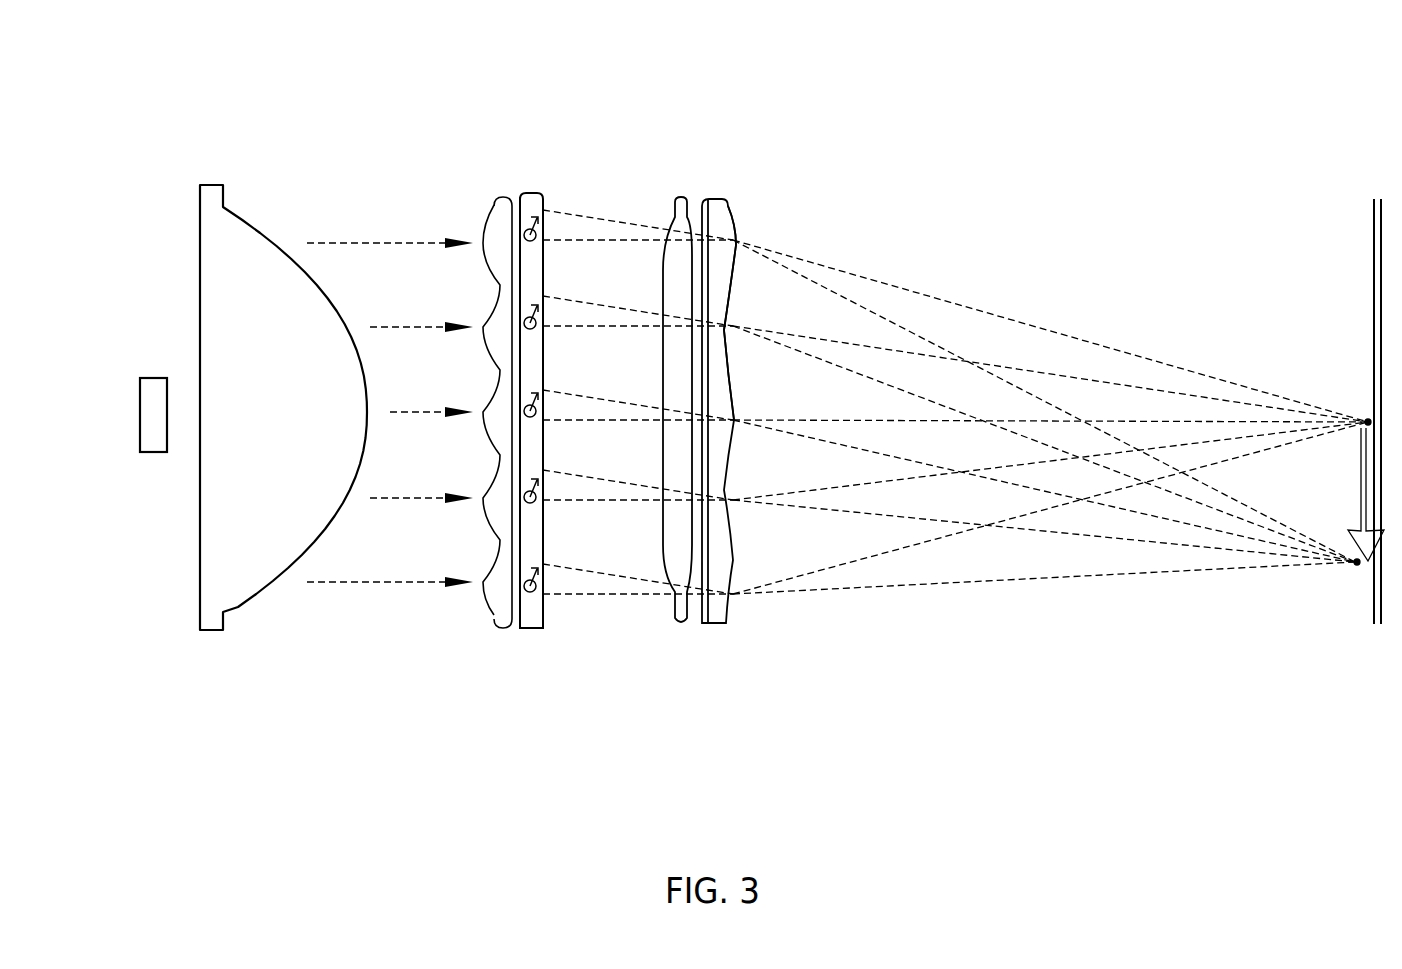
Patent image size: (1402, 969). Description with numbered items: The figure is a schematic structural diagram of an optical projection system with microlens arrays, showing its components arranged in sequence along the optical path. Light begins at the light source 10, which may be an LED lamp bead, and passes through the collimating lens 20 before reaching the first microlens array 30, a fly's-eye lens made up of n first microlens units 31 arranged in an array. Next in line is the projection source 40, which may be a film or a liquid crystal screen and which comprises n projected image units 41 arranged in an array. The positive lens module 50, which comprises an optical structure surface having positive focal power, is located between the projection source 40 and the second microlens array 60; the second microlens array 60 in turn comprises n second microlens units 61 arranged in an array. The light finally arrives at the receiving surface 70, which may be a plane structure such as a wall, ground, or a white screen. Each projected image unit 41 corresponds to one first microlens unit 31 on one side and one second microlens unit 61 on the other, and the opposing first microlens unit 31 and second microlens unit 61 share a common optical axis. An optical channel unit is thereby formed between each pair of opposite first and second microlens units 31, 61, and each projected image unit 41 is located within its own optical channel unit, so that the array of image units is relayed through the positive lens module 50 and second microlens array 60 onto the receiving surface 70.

The light source 10 is at (150, 407).
The collimating lens 20 is at (253, 334).
The first microlens array 30 is at (505, 625).
The first microlens unit 31 is at (490, 578).
The projection source 40 is at (530, 622).
The projected image unit 41 is at (516, 272).
The positive lens module 50 is at (683, 626).
The second microlens array 60 is at (724, 626).
The second microlens unit 61 is at (733, 313).
The receiving surface 70 is at (1372, 279).